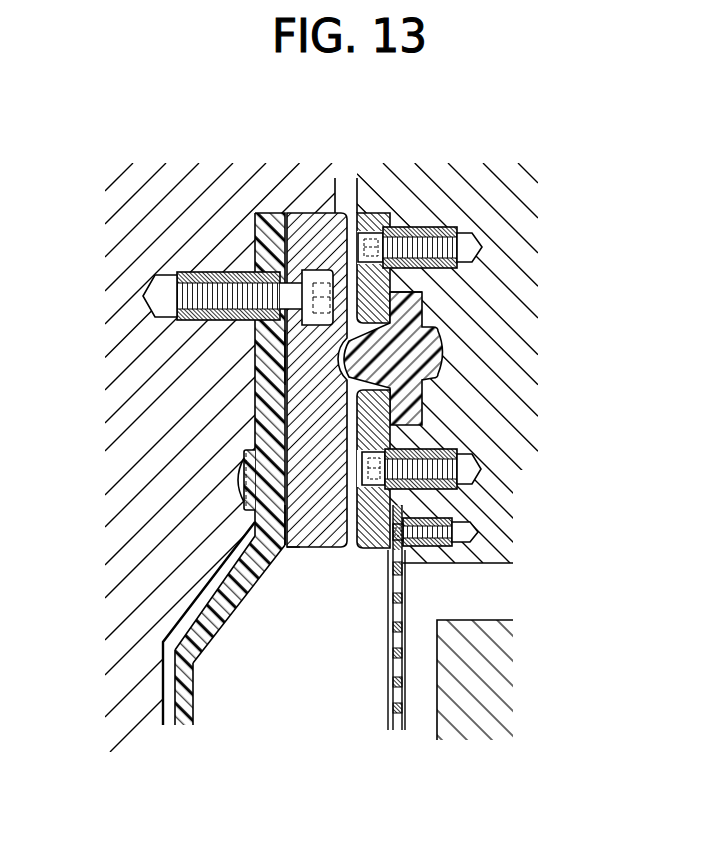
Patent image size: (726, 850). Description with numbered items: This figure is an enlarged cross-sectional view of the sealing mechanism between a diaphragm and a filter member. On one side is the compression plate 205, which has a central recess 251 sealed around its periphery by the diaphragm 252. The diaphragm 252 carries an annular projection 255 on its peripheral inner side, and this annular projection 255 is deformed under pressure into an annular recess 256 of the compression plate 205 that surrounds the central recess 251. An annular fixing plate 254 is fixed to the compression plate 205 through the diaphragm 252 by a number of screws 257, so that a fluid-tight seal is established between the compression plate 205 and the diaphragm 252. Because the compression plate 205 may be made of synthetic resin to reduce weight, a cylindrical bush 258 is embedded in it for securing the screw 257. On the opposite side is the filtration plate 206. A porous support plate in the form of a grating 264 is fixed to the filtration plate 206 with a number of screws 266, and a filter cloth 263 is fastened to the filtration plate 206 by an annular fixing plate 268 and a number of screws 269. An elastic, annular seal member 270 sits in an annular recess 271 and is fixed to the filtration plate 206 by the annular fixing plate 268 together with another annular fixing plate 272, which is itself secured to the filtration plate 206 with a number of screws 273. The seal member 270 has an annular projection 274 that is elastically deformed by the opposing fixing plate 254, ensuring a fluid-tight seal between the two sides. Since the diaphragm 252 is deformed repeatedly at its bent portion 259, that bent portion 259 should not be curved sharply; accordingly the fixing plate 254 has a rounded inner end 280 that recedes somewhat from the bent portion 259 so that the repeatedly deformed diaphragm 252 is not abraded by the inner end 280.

The compression plate 205 is at (168, 471).
The filtration plate 206 is at (557, 416).
The central recess 251 is at (163, 690).
The diaphragm 252 is at (193, 713).
The annular fixing plate 254 is at (265, 415).
The annular projection 255 is at (240, 480).
The annular recess 256 is at (247, 512).
The screw 257 is at (227, 272).
The cylindrical bush 258 is at (182, 272).
The bent portion 259 is at (285, 565).
The filter cloth 263 is at (388, 698).
The grating 264 is at (403, 598).
The screw 266 is at (478, 532).
The annular fixing plate 268 is at (372, 550).
The screw 269 is at (450, 468).
The elastic annular seal member 270 is at (423, 293).
The annular recess 271 is at (433, 330).
The annular fixing plate 272 is at (396, 212).
The screw 273 is at (480, 247).
The annular projection 274 is at (285, 357).
The rounded inner end 280 is at (313, 552).